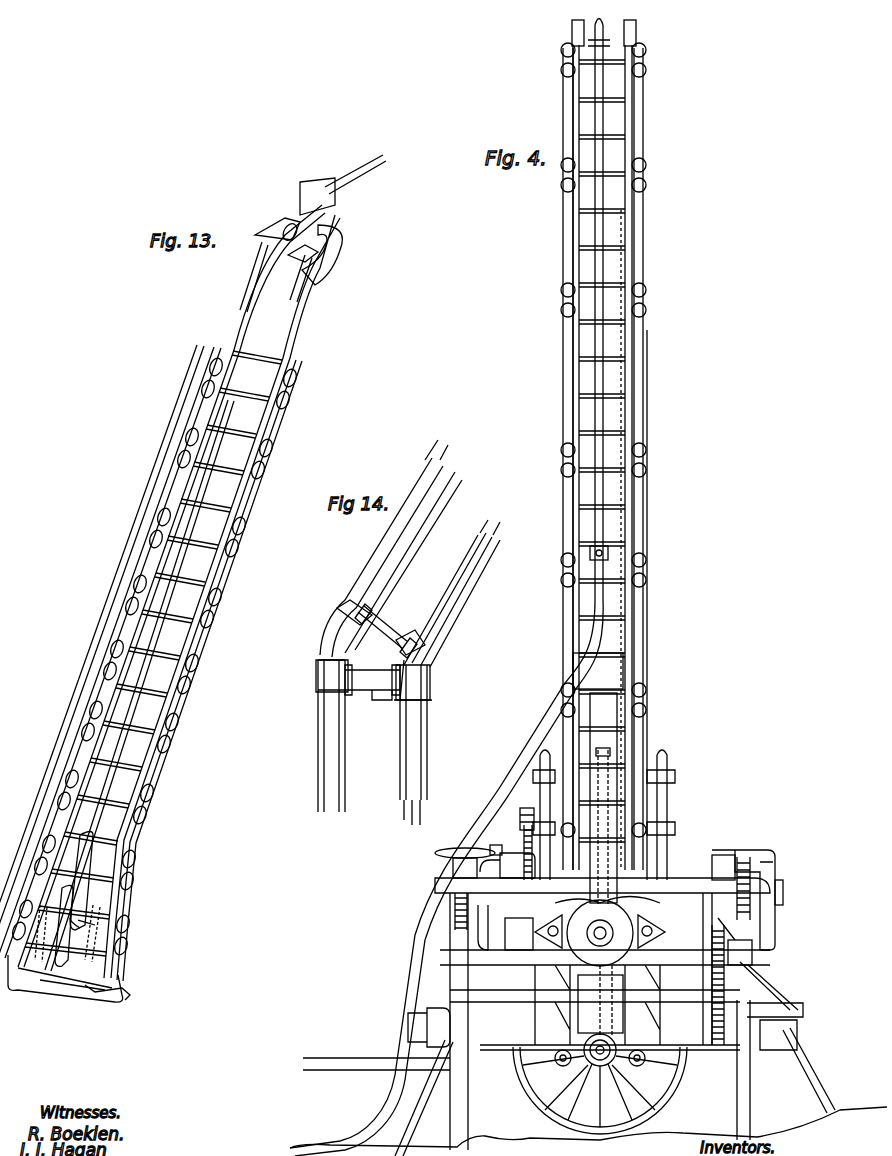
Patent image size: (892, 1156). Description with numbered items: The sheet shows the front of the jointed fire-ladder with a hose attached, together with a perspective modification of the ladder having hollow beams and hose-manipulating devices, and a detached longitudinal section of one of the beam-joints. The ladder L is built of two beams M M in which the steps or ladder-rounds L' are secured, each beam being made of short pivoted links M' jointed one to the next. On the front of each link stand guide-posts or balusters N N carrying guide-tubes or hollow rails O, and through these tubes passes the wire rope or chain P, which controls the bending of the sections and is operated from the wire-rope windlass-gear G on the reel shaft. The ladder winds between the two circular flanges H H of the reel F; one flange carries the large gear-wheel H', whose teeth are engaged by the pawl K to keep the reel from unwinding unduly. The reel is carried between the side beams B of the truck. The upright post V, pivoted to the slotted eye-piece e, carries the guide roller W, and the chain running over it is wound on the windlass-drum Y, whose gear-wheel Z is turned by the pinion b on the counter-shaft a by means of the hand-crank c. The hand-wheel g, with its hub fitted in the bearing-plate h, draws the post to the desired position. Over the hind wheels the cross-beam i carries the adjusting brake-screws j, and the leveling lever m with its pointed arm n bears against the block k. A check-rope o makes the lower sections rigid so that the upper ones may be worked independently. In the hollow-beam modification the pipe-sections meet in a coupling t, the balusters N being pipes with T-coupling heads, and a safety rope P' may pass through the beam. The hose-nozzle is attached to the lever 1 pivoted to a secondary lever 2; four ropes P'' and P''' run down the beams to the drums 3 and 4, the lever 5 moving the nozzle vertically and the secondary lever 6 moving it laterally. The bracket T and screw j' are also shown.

In FIG. 4, the ladder L is at (590, 457).
In FIG. 13, the ladder L is at (179, 591).
In FIG. 4, the steps or ladder-rounds L' is at (602, 310).
In FIG. 13, the steps or ladder-rounds L' is at (139, 685).
In FIG. 4, the guide-tubes or hollow rails O is at (561, 459).
In FIG. 13, the guide-tubes or hollow rails O is at (110, 648).
In FIG. 14, the guide-tubes or hollow rails O is at (389, 635).
In FIG. 4, the beams M is at (601, 445).
In FIG. 13, the beams M is at (209, 670).
In FIG. 14, the beams M is at (448, 666).
In FIG. 4, the links M' is at (654, 605).
In FIG. 4, the wire rope or chain P is at (604, 33).
In FIG. 4, the guide-posts or balusters N is at (597, 438).
In FIG. 13, the guide-posts or balusters N is at (155, 631).
In FIG. 14, the guide-posts or balusters N is at (381, 649).
In FIG. 4, the check-rope o is at (615, 540).
In FIG. 4, the upright post V is at (603, 798).
In FIG. 14, the upright post V is at (382, 696).
In FIG. 4, the guide pulley or roller W is at (603, 820).
In FIG. 4, the circular flanges H is at (605, 860).
In FIG. 4, the gear-wheel H' is at (525, 812).
In FIG. 4, the pawl K is at (602, 825).
In FIG. 4, the cross-beam i is at (602, 887).
In FIG. 4, the adjusting screw j' is at (592, 882).
In FIG. 4, the adjusting brake-screws j is at (469, 1021).
In FIG. 4, the side beams B is at (517, 901).
In FIG. 4, the block k is at (498, 844).
In FIG. 4, the reel F is at (494, 862).
In FIG. 4, the hand-wheel g is at (607, 932).
In FIG. 4, the bearing-plate h is at (600, 924).
In FIG. 4, the counter-shaft a is at (605, 997).
In FIG. 4, the windlass-drum Y is at (600, 1004).
In FIG. 4, the gear-wheel Z is at (665, 985).
In FIG. 4, the bracket T is at (751, 900).
In FIG. 4, the wire-rope windlass-gear G is at (723, 867).
In FIG. 4, the pinion b is at (719, 969).
In FIG. 4, the hand-crank c is at (740, 952).
In FIG. 4, the lever m is at (553, 1059).
In FIG. 4, the pointed arm n is at (786, 1070).
In FIG. 4, the slotted eye-piece e is at (588, 1078).
In FIG. 4, the secondary lever 2 is at (446, 878).
In FIG. 13, the secondary lever 2 is at (296, 232).
In FIG. 13, the lever 1 is at (343, 185).
In FIG. 13, the ropes P'' is at (167, 584).
In FIG. 14, the ropes P'' is at (444, 638).
In FIG. 13, the ropes P''' is at (232, 579).
In FIG. 14, the ropes P''' is at (457, 677).
In FIG. 13, the safety rope P' is at (300, 258).
In FIG. 13, the lever 5 is at (81, 879).
In FIG. 13, the secondary lever 6 is at (64, 925).
In FIG. 13, the drum 3 is at (82, 924).
In FIG. 13, the secondary drum 4 is at (69, 972).
In FIG. 14, the coupling t is at (417, 674).